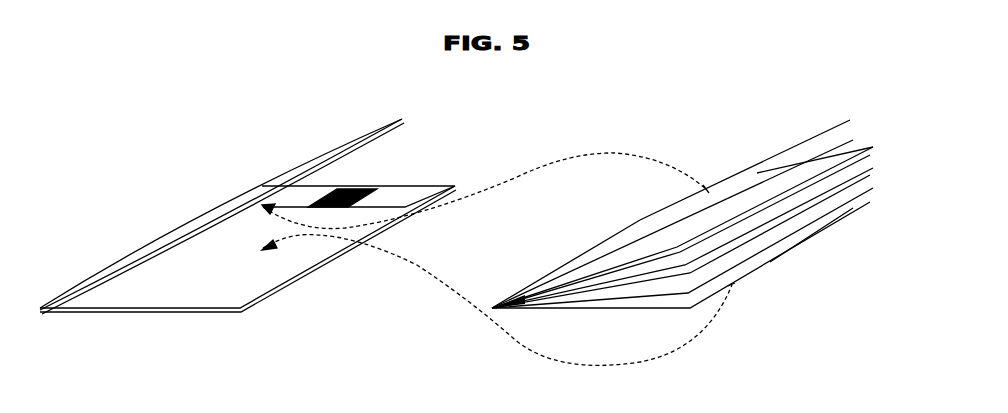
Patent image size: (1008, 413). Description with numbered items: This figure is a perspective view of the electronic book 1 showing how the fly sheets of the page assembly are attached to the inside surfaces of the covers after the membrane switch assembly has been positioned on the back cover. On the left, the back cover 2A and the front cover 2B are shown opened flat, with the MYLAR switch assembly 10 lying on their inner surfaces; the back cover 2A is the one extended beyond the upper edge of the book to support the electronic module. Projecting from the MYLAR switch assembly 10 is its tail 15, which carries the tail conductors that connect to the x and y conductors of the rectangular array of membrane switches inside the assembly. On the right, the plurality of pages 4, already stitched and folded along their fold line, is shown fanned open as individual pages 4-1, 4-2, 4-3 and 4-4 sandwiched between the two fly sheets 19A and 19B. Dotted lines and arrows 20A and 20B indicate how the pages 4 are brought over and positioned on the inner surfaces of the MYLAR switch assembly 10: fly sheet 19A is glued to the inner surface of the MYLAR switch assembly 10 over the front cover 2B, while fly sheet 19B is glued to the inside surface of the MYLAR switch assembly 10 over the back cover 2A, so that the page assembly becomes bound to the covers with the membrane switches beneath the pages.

The electronic book 1 is at (133, 347).
The back cover 2A is at (174, 313).
The front cover 2B is at (392, 124).
The MYLAR switch assembly 10 is at (220, 297).
The tail 15 is at (377, 189).
The arrow 20A is at (518, 177).
The arrow 20B is at (442, 282).
The pages 4 is at (707, 214).
The page 4-1 is at (853, 141).
The page 4-2 is at (873, 147).
The page 4-3 is at (873, 168).
The page 4-4 is at (873, 188).
The fly sheet 19A is at (850, 120).
The fly sheet 19B is at (852, 210).